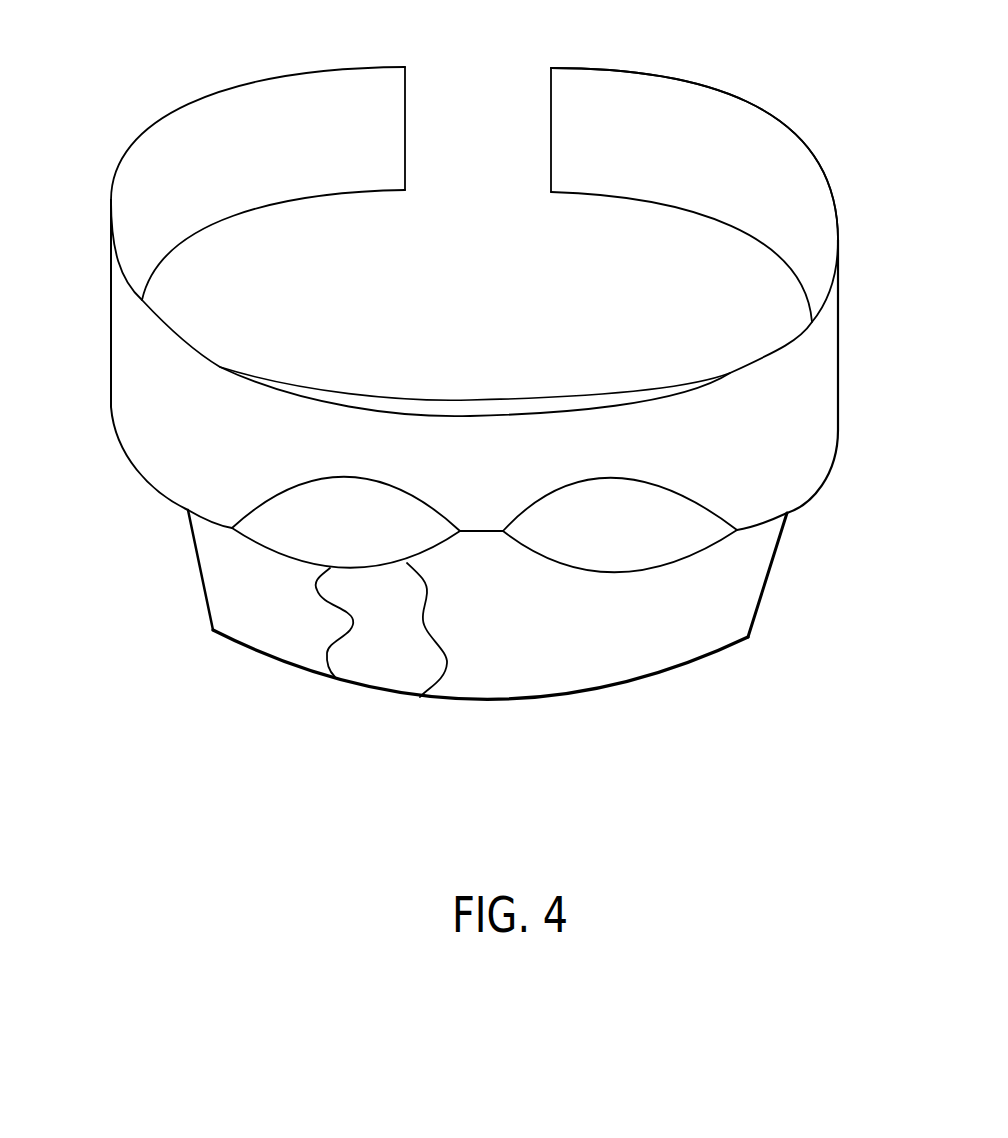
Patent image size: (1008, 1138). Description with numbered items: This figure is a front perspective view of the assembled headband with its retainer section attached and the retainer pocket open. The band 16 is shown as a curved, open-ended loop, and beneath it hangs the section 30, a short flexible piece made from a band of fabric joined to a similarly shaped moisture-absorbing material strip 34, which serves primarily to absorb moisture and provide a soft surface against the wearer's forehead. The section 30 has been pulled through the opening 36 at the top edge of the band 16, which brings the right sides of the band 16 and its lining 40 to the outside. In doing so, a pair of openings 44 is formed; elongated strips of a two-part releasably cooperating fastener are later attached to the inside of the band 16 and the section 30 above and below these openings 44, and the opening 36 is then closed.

The band 16 is at (212, 96).
The lining 40 is at (758, 172).
The opening 36 is at (462, 400).
The section 30 is at (757, 617).
The moisture-absorbing material strip 34 is at (240, 615).
The openings 44 is at (305, 528).